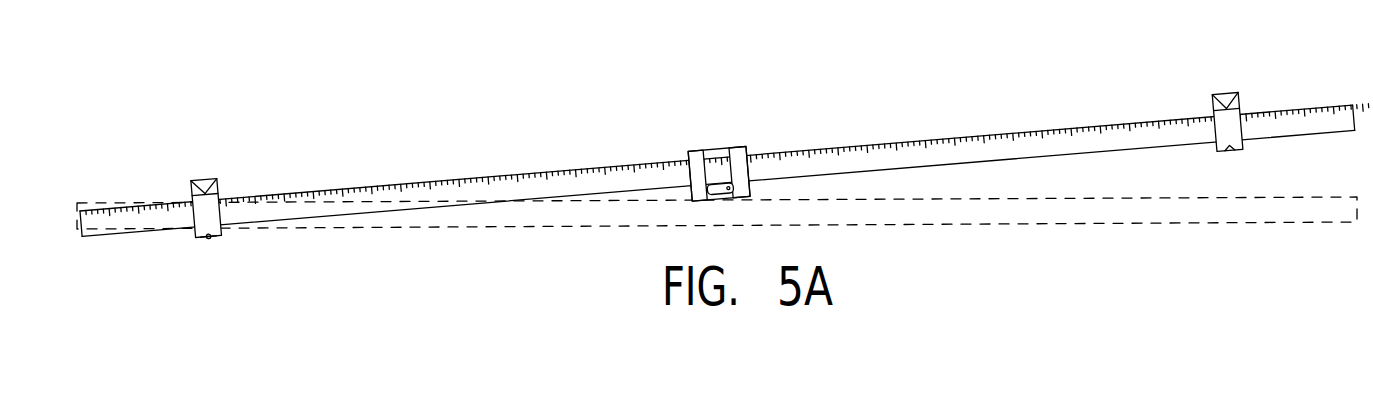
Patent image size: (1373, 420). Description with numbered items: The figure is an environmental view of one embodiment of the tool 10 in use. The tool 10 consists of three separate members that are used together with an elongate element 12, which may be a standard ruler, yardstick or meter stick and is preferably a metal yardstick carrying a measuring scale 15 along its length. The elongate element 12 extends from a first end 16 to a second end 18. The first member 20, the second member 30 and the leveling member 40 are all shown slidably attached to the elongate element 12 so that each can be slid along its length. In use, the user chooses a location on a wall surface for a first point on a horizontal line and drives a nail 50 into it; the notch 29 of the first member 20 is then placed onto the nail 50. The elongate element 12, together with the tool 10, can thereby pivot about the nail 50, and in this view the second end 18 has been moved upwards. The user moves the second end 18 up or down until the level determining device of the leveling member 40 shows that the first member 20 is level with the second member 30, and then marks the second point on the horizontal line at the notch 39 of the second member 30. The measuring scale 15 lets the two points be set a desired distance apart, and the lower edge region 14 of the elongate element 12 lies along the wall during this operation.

The tool 10 is at (864, 102).
The elongate element 12 is at (985, 152).
The lower edge 14 is at (505, 191).
The measuring scale 15 is at (567, 170).
The first end 16 is at (82, 240).
The second end 18 is at (1338, 124).
The first member 20 is at (207, 215).
The notch 29 is at (211, 269).
The nail 50 is at (208, 240).
The second member 30 is at (1228, 121).
The notch 39 is at (1230, 150).
The leveling member 40 is at (741, 152).